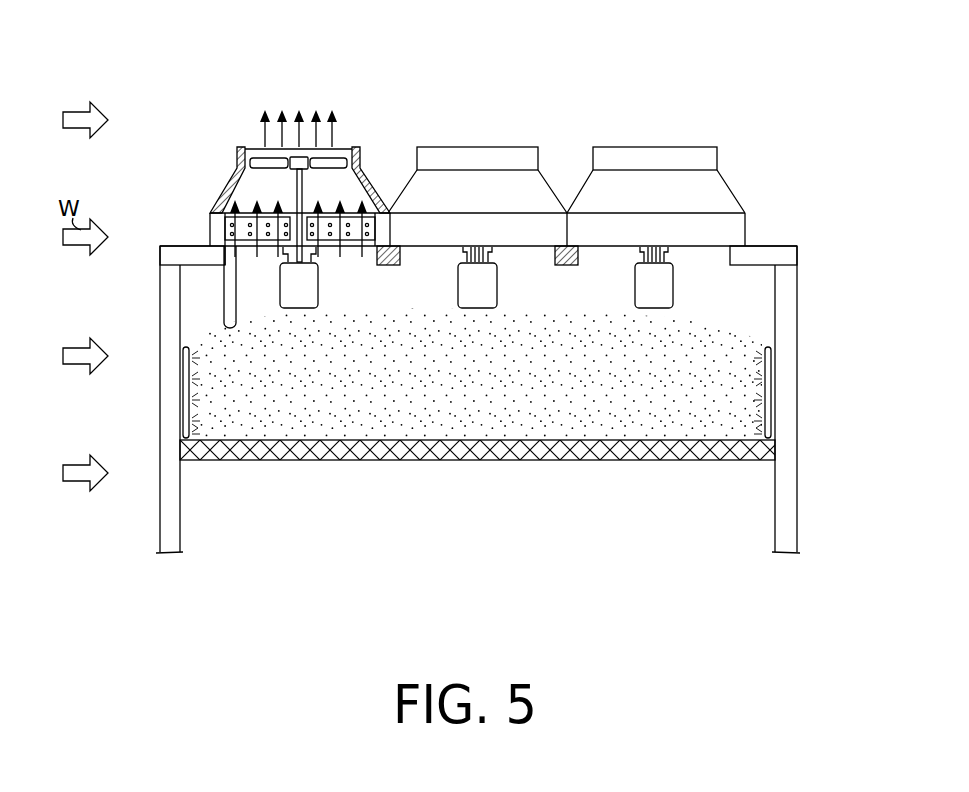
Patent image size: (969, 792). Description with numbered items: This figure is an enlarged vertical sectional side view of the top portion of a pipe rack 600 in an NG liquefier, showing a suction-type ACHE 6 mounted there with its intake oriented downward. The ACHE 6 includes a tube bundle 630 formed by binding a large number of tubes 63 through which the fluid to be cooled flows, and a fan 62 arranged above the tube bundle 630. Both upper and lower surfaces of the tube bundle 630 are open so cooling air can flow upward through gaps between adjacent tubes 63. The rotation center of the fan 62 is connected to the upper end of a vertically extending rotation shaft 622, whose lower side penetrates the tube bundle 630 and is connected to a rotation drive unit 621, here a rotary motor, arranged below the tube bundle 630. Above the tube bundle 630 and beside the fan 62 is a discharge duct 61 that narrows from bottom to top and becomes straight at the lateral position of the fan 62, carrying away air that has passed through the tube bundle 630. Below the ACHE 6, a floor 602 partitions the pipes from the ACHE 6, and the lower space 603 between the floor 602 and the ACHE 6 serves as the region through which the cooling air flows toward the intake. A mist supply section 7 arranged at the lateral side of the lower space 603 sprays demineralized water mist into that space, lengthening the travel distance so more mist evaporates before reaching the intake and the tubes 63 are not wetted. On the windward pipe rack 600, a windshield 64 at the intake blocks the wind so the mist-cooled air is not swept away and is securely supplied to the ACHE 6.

The suction-type ACHE 6 is at (415, 90).
The discharge duct 61 is at (367, 179).
The fan 62 is at (258, 157).
The rotation drive unit 621 is at (319, 284).
The rotation shaft 622 is at (305, 181).
The tubes 63 is at (232, 223).
The tube bundle 630 is at (248, 212).
The windshield 64 is at (222, 287).
The pipe rack 600 is at (797, 312).
The floor 602 is at (693, 462).
The lower space 603 is at (704, 323).
The mist supply section 7 is at (183, 395).